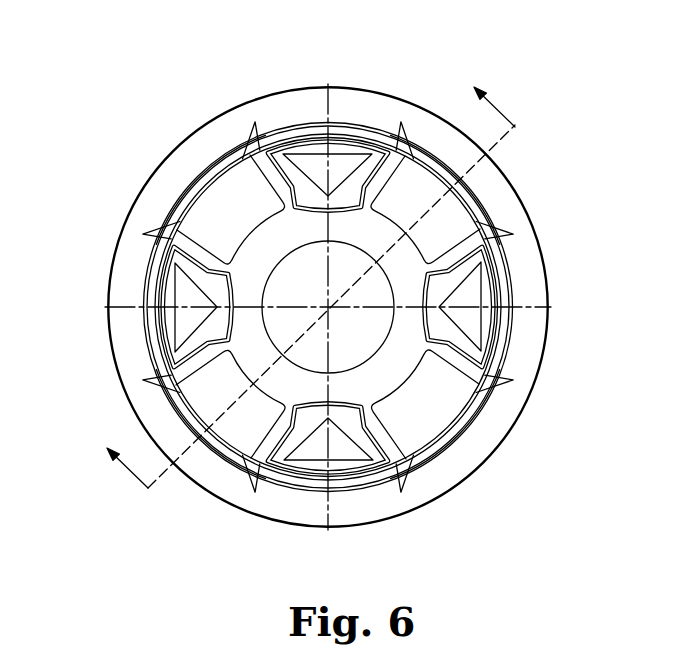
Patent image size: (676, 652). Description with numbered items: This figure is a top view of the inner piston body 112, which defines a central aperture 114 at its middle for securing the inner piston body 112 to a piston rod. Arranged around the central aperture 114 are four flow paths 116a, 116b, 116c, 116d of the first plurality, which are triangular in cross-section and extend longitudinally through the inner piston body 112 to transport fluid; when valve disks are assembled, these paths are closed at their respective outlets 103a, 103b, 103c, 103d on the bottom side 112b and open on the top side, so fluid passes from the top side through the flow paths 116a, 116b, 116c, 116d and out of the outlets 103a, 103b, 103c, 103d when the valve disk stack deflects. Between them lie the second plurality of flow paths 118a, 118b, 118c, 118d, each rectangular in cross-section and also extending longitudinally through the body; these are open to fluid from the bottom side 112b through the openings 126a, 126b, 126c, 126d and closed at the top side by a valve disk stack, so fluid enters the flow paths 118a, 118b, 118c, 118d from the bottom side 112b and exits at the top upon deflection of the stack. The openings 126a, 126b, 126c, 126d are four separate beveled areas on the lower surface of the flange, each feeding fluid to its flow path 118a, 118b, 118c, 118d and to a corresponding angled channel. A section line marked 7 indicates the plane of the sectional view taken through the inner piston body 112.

The inner piston body 112 is at (107, 83).
The bottom side 112b is at (252, 274).
The central aperture 114 is at (364, 340).
The outlet 103a is at (488, 328).
The outlet 103b is at (361, 463).
The outlet 103c is at (170, 287).
The outlet 103d is at (295, 151).
The flow path 116a is at (473, 289).
The flow path 116b is at (313, 452).
The flow path 116c is at (183, 325).
The flow path 116d is at (343, 162).
The flow path 118a is at (445, 213).
The flow path 118b is at (450, 398).
The flow path 118c is at (207, 400).
The flow path 118d is at (232, 190).
The beveled area 126a is at (437, 157).
The beveled area 126b is at (453, 440).
The beveled area 126c is at (212, 450).
The beveled area 126d is at (180, 193).
The section line 7- 7 is at (304, 279).